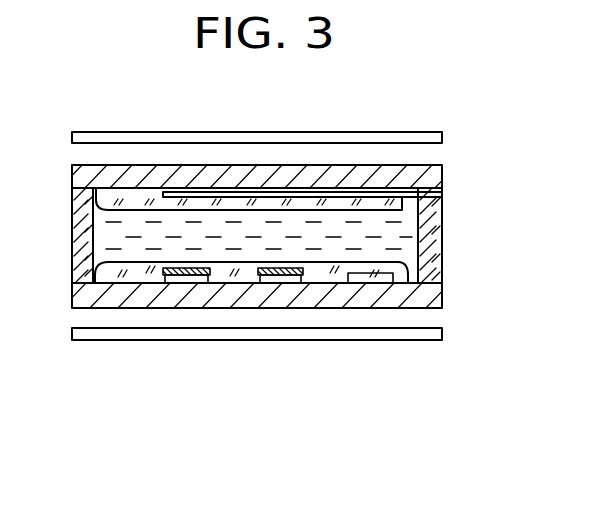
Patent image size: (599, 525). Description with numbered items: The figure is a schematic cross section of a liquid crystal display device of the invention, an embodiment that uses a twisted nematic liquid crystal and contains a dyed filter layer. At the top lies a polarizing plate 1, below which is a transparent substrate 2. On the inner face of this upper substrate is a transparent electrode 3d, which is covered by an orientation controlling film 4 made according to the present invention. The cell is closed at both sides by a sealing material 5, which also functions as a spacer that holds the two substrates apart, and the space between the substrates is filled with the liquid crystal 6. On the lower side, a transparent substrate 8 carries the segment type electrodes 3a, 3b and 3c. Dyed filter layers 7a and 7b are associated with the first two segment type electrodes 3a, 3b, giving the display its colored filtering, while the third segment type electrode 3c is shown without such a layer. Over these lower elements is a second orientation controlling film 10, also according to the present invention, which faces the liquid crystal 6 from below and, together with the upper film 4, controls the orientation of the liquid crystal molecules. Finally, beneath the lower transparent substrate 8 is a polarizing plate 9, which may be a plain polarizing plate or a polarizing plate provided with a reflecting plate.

The polarizing plate 1 is at (442, 137).
The transparent substrate 2 is at (442, 176).
The transparent electrode 3d is at (442, 193).
The orientation controlling film 4 is at (97, 194).
The sealing material 5 is at (442, 240).
The liquid crystal 6 is at (108, 237).
The orientation controlling film 10 is at (108, 276).
The dyed filter layer 7a is at (173, 283).
The segment type electrode 3a is at (193, 283).
The dyed filter layer 7b is at (262, 283).
The segment type electrode 3b is at (283, 283).
The segment type electrode 3c is at (375, 283).
The transparent substrate 8 is at (442, 290).
The polarizing plate 9 is at (442, 332).